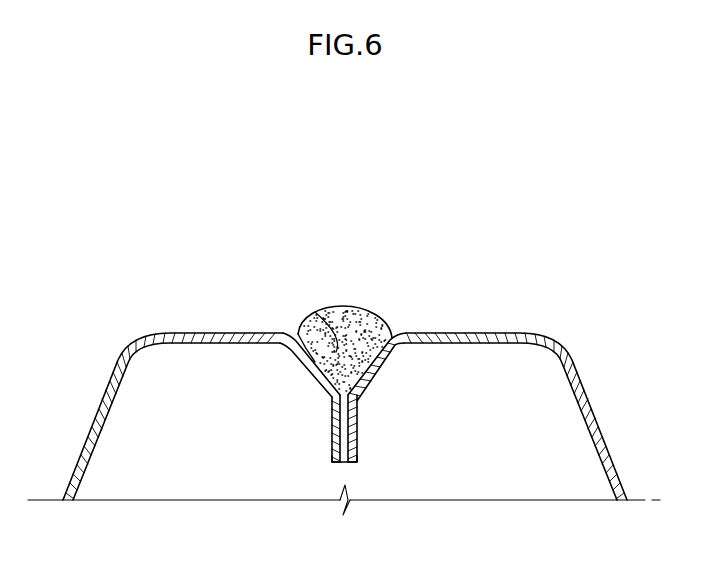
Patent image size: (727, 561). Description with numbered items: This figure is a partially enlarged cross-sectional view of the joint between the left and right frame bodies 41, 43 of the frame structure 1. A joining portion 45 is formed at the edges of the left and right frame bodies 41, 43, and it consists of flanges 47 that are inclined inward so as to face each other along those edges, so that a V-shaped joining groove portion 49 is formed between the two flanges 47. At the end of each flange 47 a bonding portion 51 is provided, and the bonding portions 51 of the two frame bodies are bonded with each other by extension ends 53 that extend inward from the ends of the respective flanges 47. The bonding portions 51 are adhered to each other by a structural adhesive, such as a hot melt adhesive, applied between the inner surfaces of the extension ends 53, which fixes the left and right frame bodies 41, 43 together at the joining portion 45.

The vehicle body panel joint structure 1 is at (346, 367).
The left frame body 41 is at (225, 333).
The right frame body 43 is at (472, 333).
The joining portion 45 is at (383, 303).
The flange 47 is at (310, 367).
The V-shaped joining groove portion 49 is at (327, 363).
The bonding portion 51 is at (374, 428).
The extension end 53 is at (332, 446).